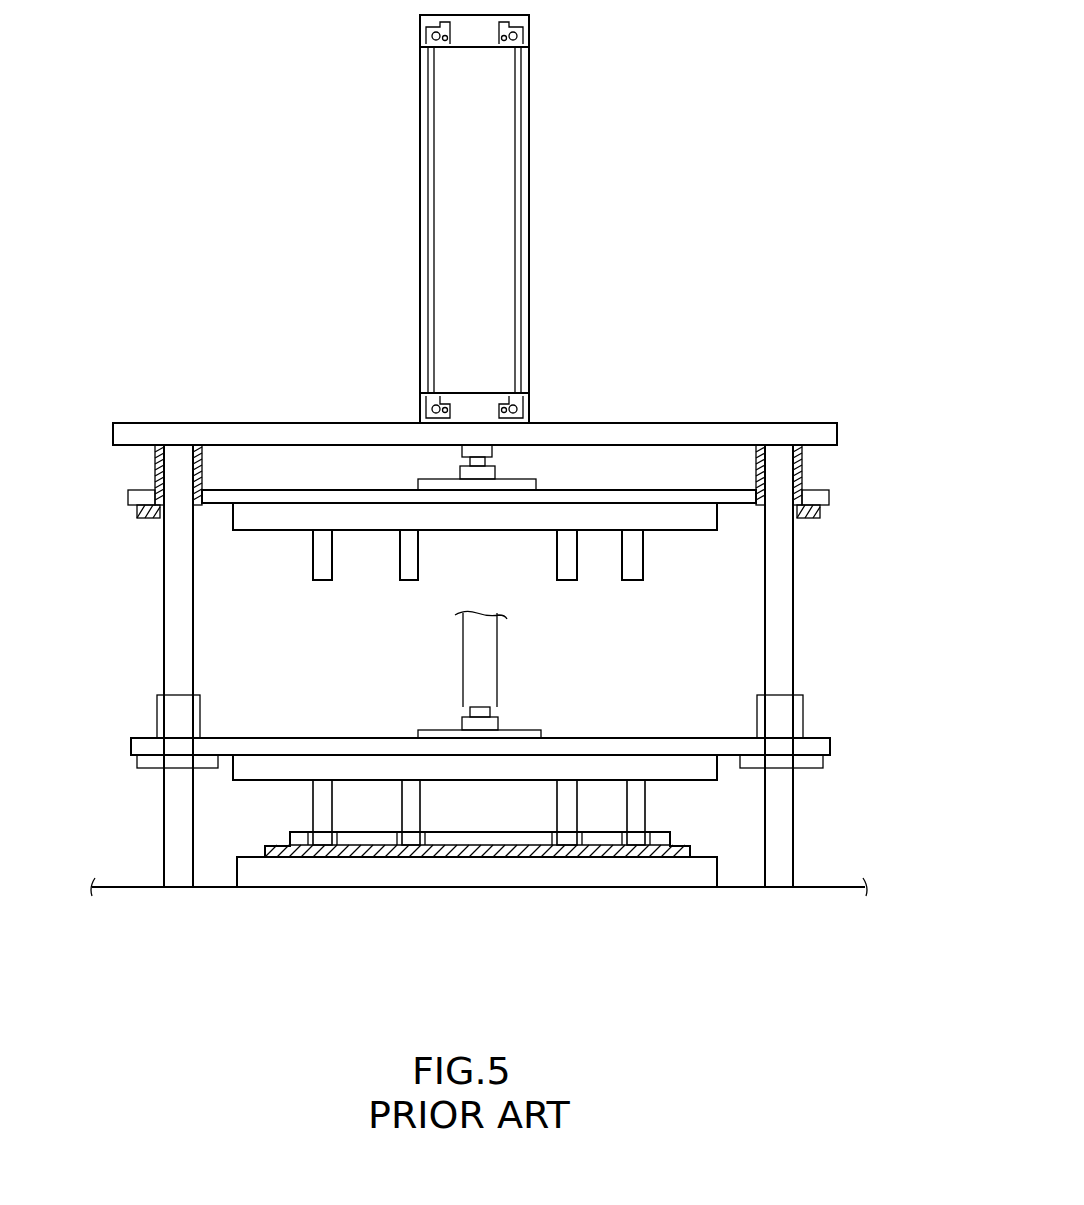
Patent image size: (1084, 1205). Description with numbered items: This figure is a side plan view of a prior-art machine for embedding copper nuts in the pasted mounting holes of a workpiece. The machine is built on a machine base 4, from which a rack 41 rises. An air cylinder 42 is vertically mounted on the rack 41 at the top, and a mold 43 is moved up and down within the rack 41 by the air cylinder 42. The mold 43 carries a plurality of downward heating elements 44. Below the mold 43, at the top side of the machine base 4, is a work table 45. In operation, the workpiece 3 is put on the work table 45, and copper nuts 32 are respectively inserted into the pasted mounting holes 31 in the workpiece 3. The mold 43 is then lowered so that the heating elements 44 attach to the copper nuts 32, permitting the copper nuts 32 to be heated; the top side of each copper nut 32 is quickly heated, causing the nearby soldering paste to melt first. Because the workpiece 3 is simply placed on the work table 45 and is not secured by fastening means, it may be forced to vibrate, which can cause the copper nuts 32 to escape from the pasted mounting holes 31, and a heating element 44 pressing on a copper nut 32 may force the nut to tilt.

The workpiece 3 is at (470, 852).
The machine base 4 is at (826, 879).
The pasted mounting holes 31 is at (635, 830).
The copper nuts 32 is at (580, 836).
The rack 41 is at (636, 428).
The air cylinder 42 is at (498, 243).
The mold 43 is at (315, 492).
The heating elements 44 is at (565, 572).
The work table 45 is at (345, 876).